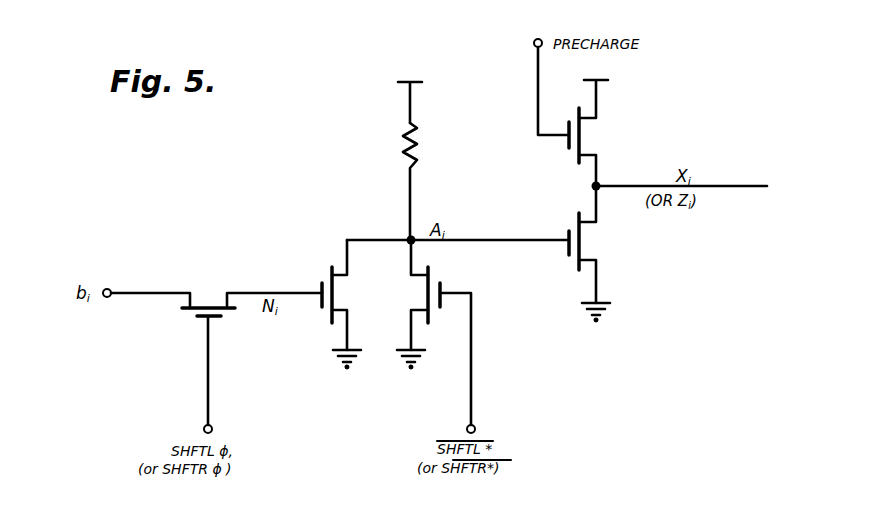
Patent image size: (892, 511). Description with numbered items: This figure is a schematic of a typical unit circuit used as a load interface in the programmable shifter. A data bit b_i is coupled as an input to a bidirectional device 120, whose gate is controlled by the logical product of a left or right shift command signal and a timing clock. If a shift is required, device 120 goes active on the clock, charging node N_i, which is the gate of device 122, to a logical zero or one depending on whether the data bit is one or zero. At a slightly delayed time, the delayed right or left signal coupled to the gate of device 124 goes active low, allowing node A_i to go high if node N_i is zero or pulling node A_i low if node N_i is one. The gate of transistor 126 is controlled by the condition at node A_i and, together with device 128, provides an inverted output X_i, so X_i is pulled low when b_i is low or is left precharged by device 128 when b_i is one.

The bidirectional device 120 is at (197, 313).
The device 122 is at (328, 276).
The device 124 is at (440, 282).
The transistor 126 is at (575, 221).
The device 128 is at (574, 151).